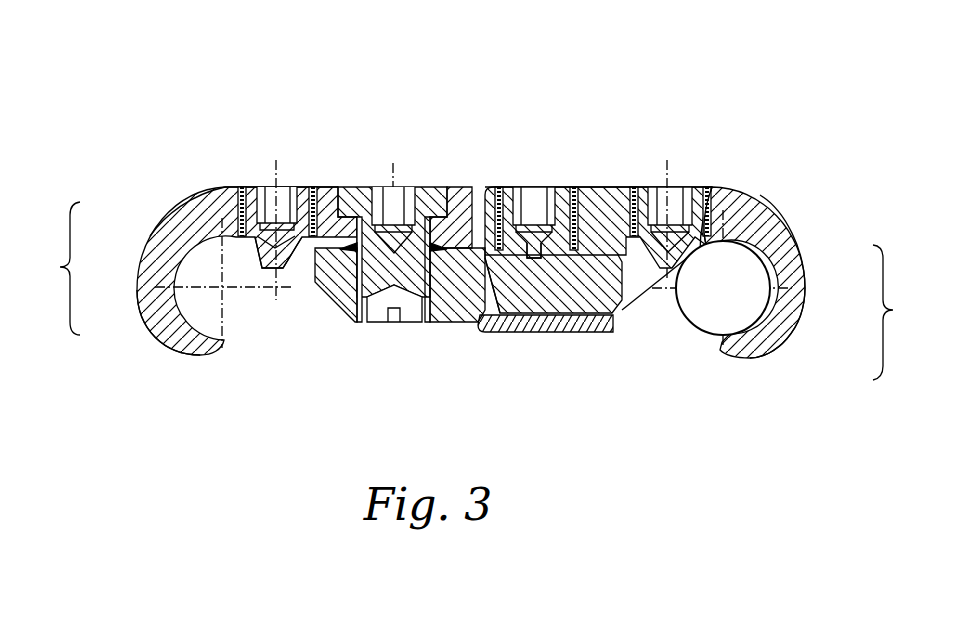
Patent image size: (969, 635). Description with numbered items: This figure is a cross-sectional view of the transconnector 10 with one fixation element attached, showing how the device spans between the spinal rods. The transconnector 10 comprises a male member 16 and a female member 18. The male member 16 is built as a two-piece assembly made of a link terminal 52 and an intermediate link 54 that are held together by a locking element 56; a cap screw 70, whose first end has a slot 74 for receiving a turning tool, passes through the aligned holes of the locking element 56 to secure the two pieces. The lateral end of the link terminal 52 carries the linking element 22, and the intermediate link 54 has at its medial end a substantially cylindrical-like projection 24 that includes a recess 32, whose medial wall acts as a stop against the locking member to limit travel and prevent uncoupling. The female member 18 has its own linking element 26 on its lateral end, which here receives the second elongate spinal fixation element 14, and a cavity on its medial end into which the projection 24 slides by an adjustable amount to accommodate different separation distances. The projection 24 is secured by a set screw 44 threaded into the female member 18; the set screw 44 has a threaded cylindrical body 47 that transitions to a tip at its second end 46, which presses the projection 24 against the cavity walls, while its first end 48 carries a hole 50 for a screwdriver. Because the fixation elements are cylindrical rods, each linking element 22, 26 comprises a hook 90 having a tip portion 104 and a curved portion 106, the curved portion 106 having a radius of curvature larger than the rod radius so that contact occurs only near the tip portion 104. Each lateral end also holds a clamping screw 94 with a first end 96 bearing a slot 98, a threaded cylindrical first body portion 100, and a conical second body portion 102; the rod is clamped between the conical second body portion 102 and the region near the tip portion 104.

The transconnector 10 is at (605, 66).
The second elongate spinal fixation element 14 is at (698, 340).
The male member 16 is at (322, 188).
The female member 18 is at (597, 188).
The linking element 22 is at (194, 188).
The projection 24 is at (456, 340).
The linking element 26 is at (766, 195).
The recess 32 is at (597, 340).
The set screw 44 is at (510, 188).
The second end 46 is at (534, 335).
The threaded cylindrical body 47 is at (500, 335).
The first end 48 is at (563, 188).
The hole 50 is at (528, 188).
The link terminal 52 is at (222, 187).
The intermediate link 54 is at (458, 188).
The locking element 56 is at (357, 188).
The cap screw 70 is at (428, 188).
The slot 74 is at (388, 188).
The hook 90 is at (469, 291).
The clamping screw 94 is at (250, 188).
The first end 96 is at (638, 188).
The slot 98 is at (282, 188).
The threaded cylindrical first body portion 100 is at (728, 188).
The conical second body portion 102 is at (252, 262).
The tip portion 104 is at (195, 362).
The curved portion 106 is at (150, 236).